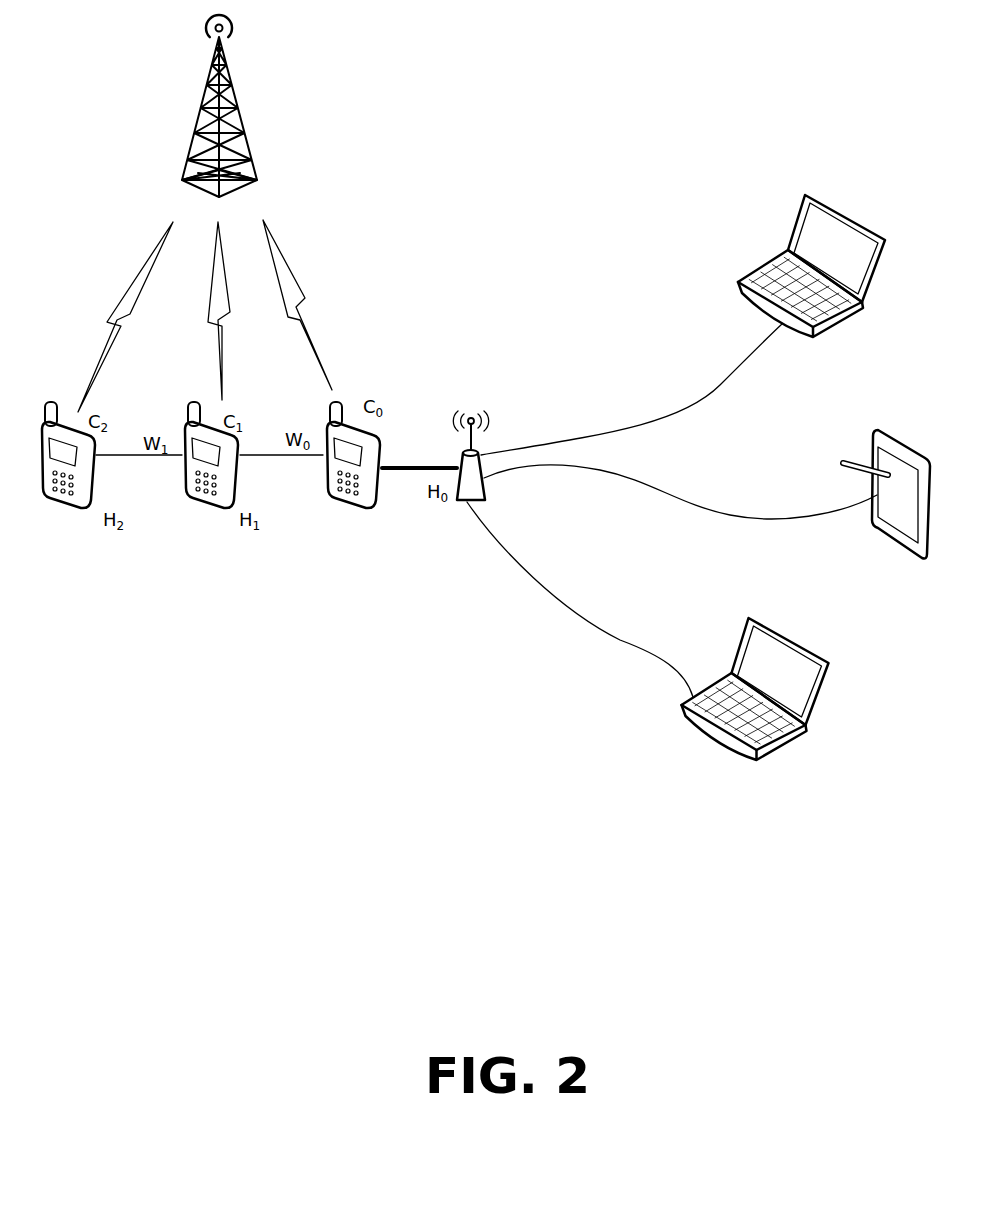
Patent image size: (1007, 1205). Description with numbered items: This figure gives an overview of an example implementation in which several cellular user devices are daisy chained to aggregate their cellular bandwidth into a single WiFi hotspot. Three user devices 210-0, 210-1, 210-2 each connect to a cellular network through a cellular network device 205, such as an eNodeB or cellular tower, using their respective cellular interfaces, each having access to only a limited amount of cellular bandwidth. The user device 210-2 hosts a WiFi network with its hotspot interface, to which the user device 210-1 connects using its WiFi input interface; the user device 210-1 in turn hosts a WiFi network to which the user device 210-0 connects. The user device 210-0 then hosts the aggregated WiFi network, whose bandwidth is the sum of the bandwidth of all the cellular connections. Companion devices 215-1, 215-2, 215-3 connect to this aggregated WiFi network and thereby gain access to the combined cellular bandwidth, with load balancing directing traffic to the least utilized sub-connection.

The cellular network device 205 is at (240, 107).
The user device 210-0 is at (355, 496).
The user device 210-1 is at (211, 495).
The user device 210-2 is at (57, 512).
The companion device 215-1 is at (787, 227).
The companion device 215-2 is at (872, 445).
The companion device 215-3 is at (797, 745).